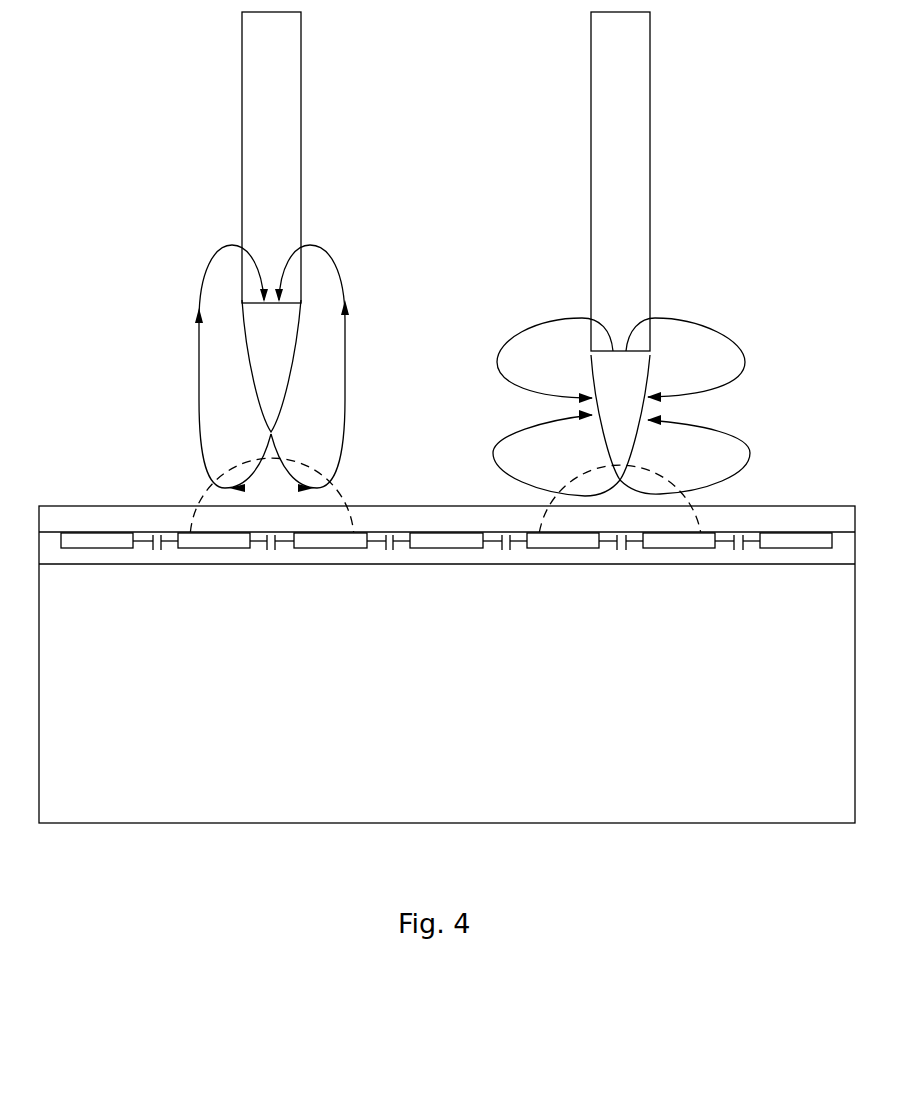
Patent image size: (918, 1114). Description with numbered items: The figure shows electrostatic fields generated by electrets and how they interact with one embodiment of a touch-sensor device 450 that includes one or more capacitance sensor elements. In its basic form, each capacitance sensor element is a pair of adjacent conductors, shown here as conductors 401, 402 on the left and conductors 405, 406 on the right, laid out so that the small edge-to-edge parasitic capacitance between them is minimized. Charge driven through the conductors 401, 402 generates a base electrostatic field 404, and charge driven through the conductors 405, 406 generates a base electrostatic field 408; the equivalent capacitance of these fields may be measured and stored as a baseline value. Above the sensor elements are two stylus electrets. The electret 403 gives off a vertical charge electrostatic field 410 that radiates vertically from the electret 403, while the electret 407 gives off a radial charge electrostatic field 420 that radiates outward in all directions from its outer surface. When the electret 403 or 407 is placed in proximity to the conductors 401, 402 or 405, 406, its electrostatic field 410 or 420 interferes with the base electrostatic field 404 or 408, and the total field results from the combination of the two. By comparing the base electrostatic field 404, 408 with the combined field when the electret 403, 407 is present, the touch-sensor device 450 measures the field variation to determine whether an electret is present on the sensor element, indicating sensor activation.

The conductor 401 is at (352, 548).
The conductor 402 is at (185, 548).
The electret 403 is at (246, 352).
The electrostatic field 404 is at (207, 482).
The conductor 405 is at (690, 548).
The conductor 406 is at (543, 548).
The electret 407 is at (590, 364).
The electrostatic field 408 is at (695, 490).
The electrostatic field 410 is at (333, 257).
The electrostatic field 420 is at (695, 320).
The touch-sensor device 450 is at (447, 664).